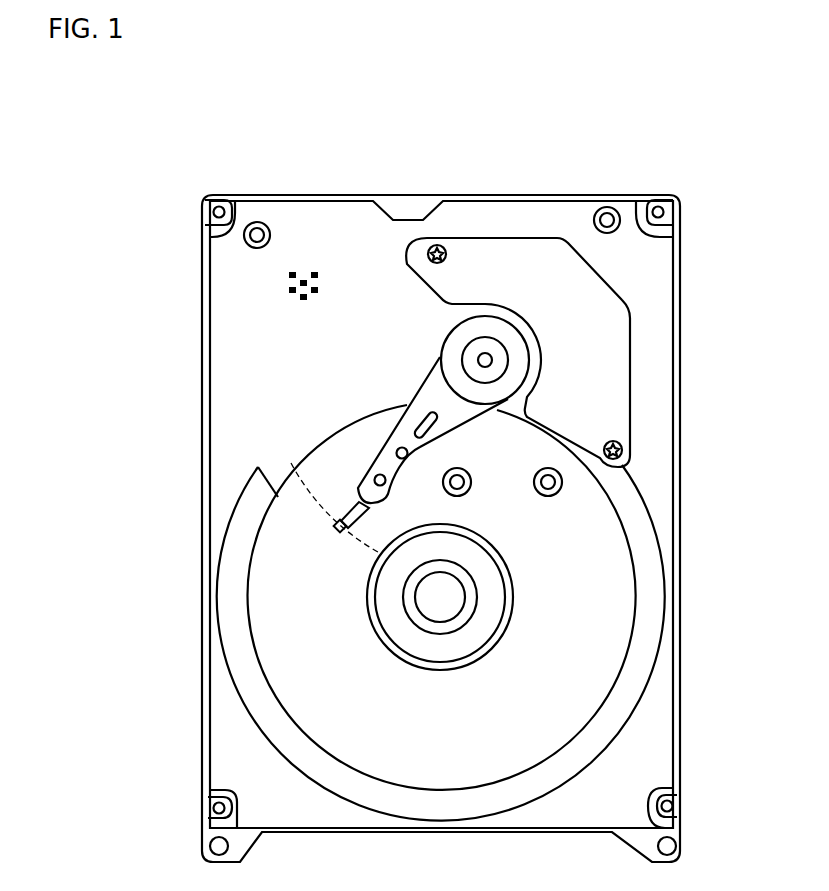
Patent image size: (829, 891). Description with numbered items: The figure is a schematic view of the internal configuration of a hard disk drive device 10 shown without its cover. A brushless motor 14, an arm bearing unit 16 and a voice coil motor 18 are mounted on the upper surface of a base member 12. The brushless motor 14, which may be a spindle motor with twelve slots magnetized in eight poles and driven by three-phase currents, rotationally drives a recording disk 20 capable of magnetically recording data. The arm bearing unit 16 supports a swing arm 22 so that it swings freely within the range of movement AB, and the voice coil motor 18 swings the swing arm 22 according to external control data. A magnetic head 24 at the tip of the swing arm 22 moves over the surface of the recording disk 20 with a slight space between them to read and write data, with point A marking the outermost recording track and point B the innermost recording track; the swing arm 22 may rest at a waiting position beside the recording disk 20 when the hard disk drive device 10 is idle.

The hard disk drive device 10 is at (541, 156).
The base member 12 is at (681, 277).
The brushless motor 14 is at (500, 573).
The arm bearing unit 16 is at (528, 362).
The voice coil motor 18 is at (603, 263).
The recording disk 20 is at (605, 630).
The swing arm 22 is at (412, 407).
The magnetic head 24 is at (338, 527).